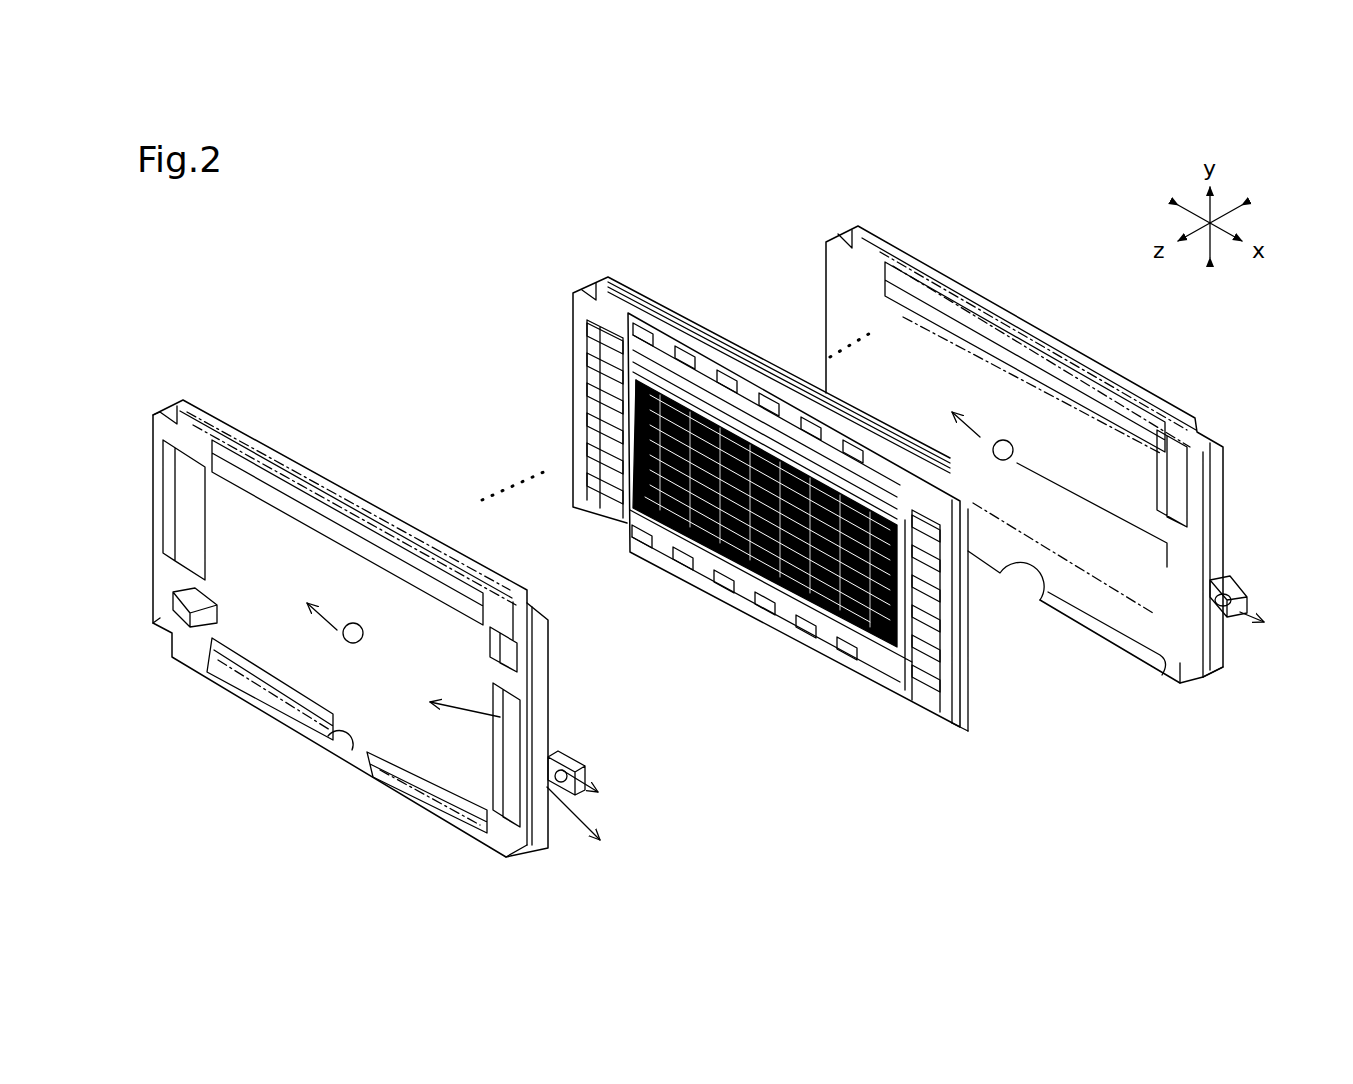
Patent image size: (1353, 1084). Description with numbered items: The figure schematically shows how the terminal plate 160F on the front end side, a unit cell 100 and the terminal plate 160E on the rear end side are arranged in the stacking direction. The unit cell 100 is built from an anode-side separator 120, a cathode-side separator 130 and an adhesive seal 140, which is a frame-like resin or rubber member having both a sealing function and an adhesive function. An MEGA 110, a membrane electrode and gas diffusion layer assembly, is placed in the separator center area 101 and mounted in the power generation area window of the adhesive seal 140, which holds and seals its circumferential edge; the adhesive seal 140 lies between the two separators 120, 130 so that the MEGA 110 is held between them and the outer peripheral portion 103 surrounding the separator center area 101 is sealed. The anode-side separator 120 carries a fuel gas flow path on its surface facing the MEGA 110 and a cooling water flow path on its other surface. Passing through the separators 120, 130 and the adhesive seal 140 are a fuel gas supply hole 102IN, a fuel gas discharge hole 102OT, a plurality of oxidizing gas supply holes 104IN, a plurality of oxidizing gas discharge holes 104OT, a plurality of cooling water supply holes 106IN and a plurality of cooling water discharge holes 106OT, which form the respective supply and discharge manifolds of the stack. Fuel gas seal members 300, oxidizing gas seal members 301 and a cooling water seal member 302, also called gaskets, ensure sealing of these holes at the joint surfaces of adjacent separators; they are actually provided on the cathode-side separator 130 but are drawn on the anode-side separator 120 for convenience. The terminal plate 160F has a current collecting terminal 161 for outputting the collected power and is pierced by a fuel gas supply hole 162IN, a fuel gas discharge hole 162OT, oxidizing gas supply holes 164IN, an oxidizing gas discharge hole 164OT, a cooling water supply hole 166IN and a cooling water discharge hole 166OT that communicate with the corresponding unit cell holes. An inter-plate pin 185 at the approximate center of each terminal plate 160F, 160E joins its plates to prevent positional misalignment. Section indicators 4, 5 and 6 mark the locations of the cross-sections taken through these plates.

The unit cell 100 is at (723, 285).
The separator center area 101 is at (626, 503).
The fuel gas supply hole 102IN is at (963, 607).
The fuel gas discharge hole 102OT is at (586, 458).
The outer peripheral portion 103 is at (598, 518).
The oxidizing gas supply holes 104IN is at (840, 655).
The oxidizing gas discharge holes 104OT is at (817, 413).
The cooling water supply holes 106IN is at (958, 640).
The cooling water discharge holes 106OT is at (577, 420).
The MEGA 110 is at (587, 294).
The adhesive seal 140 is at (587, 300).
The anode-side separator 120 is at (607, 311).
The cathode-side separator 130 is at (596, 292).
The terminal plate 160F is at (195, 399).
The terminal plate 160E is at (880, 228).
The current collecting terminal 161 is at (572, 760).
The fuel gas supply hole 162IN is at (491, 648).
The fuel gas discharge hole 162OT is at (207, 590).
The oxidizing gas supply holes 164IN is at (386, 702).
The oxidizing gas discharge hole 164OT is at (333, 503).
The cooling water supply hole 166IN is at (497, 706).
The cooling water discharge hole 166OT is at (190, 494).
The inter-plate pin 185 is at (366, 612).
The fuel gas seal members 300 is at (185, 652).
The oxidizing gas seal members 301 is at (322, 502).
The cooling water seal member 302 is at (563, 698).
The section line IV 4 is at (470, 711).
The section line V 5 is at (525, 740).
The section line VI 6 is at (1121, 505).